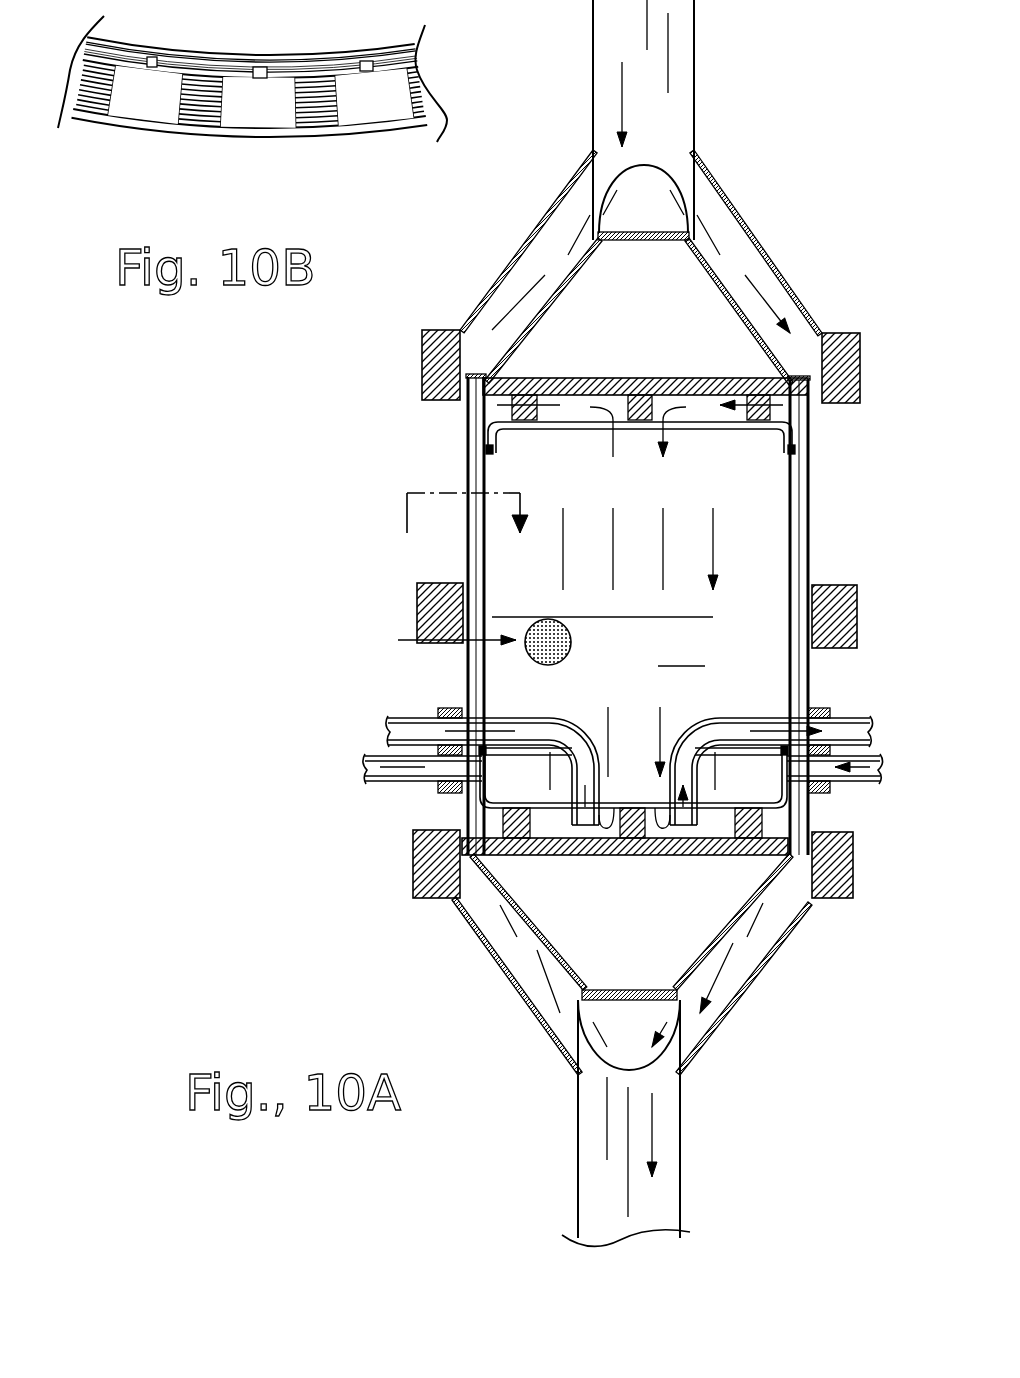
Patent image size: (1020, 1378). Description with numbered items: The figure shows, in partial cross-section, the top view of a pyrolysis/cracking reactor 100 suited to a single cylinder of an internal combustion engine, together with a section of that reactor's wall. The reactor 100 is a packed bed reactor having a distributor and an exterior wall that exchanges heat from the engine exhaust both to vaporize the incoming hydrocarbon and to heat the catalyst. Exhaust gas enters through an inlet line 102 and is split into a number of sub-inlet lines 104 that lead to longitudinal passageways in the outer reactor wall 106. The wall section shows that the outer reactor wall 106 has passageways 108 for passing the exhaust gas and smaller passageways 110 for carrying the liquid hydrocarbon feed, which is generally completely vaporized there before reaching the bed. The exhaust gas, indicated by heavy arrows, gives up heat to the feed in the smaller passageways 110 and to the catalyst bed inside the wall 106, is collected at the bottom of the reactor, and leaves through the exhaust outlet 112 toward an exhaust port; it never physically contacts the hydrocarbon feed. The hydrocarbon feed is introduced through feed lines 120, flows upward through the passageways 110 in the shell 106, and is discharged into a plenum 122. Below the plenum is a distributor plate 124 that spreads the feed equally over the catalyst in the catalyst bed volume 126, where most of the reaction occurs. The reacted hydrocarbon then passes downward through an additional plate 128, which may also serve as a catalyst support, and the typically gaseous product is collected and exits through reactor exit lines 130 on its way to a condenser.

In FIG. 10A, the reactor 100 is at (792, 157).
In FIG. 10A, the inlet line 102 is at (673, 65).
In FIG. 10A, the conical transition section 104 is at (547, 240).
In FIG. 10B, the outer reactor wall 106 is at (313, 140).
In FIG. 10A, the outer reactor wall 106 is at (812, 500).
In FIG. 10B, the passageways 108 is at (365, 107).
In FIG. 10B, the smaller passageways 110 is at (150, 64).
In FIG. 10A, the outlet pipe 112 is at (590, 1150).
In FIG. 10A, the feed lines 120 is at (413, 793).
In FIG. 10A, the plenum 122 is at (558, 417).
In FIG. 10A, the distributor plate 124 is at (695, 430).
In FIG. 10A, the catalyst bed volume 126 is at (555, 587).
In FIG. 10A, the plate 128 is at (490, 862).
In FIG. 10A, the reactor exit lines 130 is at (410, 716).